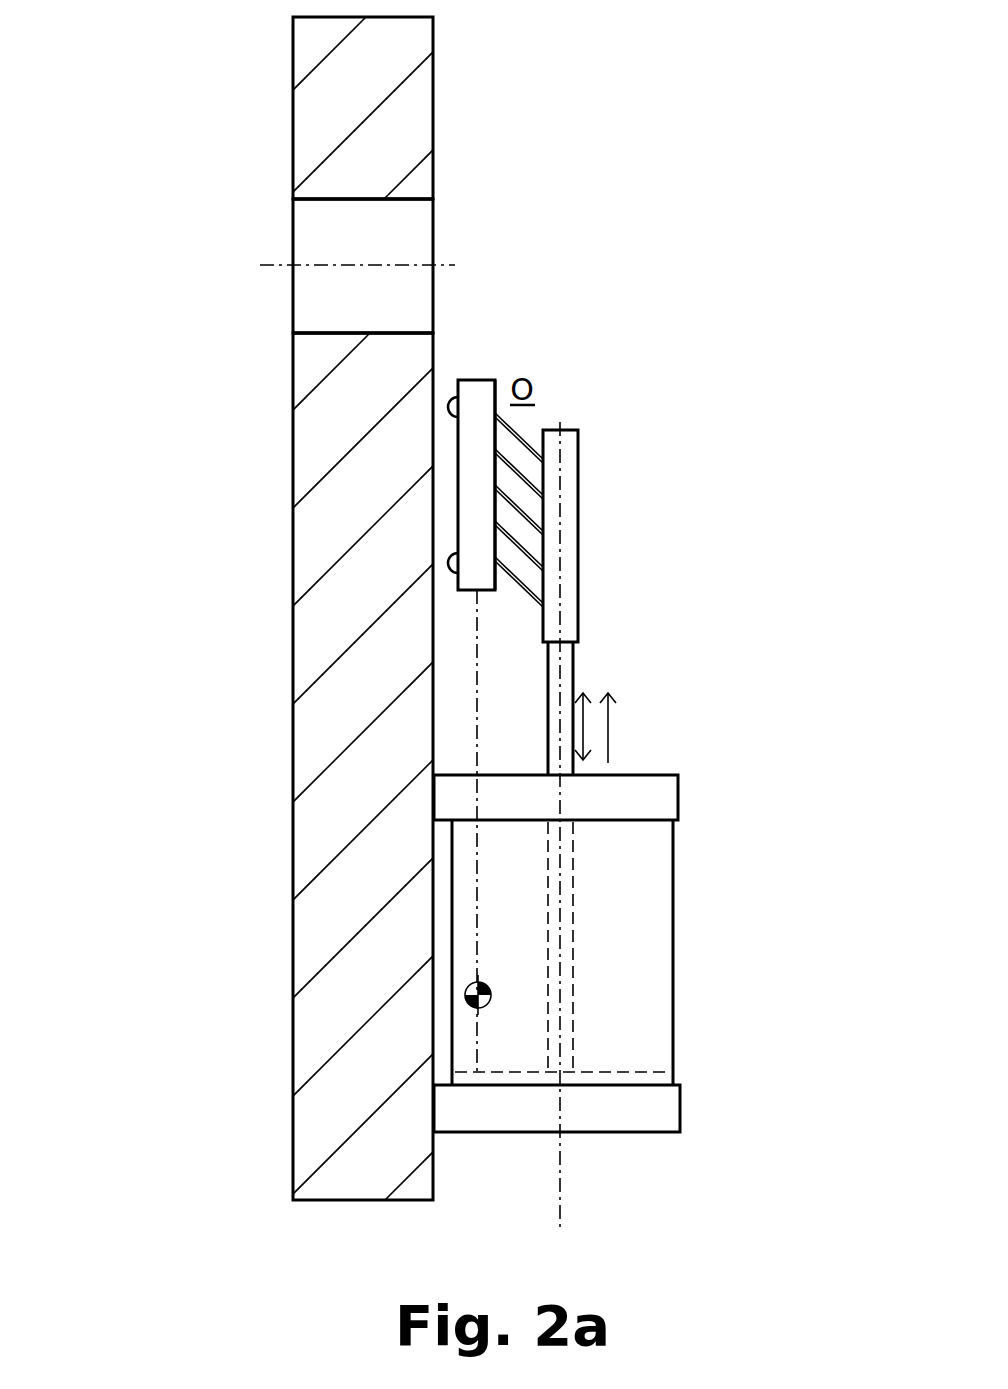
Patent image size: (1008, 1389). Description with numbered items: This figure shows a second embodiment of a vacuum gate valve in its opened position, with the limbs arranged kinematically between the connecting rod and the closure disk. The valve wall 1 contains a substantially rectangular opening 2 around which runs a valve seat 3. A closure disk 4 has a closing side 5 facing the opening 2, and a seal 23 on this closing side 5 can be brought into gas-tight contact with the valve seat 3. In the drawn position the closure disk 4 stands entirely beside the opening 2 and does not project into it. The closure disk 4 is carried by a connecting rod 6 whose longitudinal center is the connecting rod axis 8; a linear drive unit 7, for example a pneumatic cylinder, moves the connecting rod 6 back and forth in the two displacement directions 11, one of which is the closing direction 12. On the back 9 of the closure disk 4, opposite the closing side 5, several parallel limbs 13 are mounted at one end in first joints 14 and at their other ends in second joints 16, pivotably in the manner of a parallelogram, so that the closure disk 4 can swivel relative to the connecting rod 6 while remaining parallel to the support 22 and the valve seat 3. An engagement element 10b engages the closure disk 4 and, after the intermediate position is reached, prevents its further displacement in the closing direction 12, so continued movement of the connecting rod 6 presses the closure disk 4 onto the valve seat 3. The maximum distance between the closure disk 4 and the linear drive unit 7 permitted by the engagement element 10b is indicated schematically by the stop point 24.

The valve wall 1 is at (362, 140).
The opening 2 is at (365, 238).
The valve seat 3 is at (428, 183).
The closure disk 4 is at (280, 726).
The closing side 5 is at (458, 470).
The connecting rod 6 is at (548, 708).
The linear drive unit 7 is at (512, 1040).
The connecting rod axis 8 is at (560, 735).
The back 9 is at (493, 580).
The engagement element 10b is at (477, 637).
The displacement direction 11 is at (583, 740).
The closing direction 12 is at (608, 722).
The limb 13 is at (517, 510).
The first joint 14 is at (493, 485).
The second joint 16 is at (542, 535).
The support 22 is at (570, 470).
The seal 23 is at (445, 408).
The stop point 24 is at (468, 998).